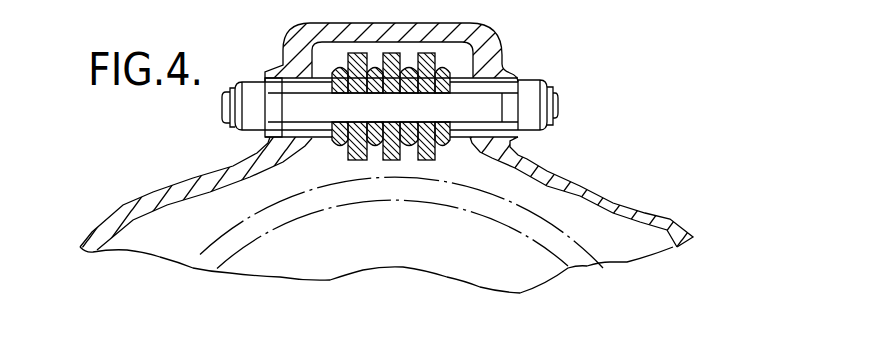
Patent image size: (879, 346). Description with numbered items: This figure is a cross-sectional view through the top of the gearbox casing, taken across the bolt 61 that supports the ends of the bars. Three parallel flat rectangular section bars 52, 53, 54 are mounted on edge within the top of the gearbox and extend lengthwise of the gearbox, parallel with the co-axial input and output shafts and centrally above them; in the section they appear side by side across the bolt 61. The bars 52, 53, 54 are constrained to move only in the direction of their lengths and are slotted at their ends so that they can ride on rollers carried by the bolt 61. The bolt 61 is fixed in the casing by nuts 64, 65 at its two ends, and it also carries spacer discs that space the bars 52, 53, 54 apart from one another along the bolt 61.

The flat rectangular section bar 52 is at (352, 160).
The flat rectangular section bar 53 is at (388, 160).
The flat rectangular section bar 54 is at (423, 160).
The bolt 61 is at (468, 102).
The nut 64 is at (255, 118).
The nut 65 is at (528, 90).